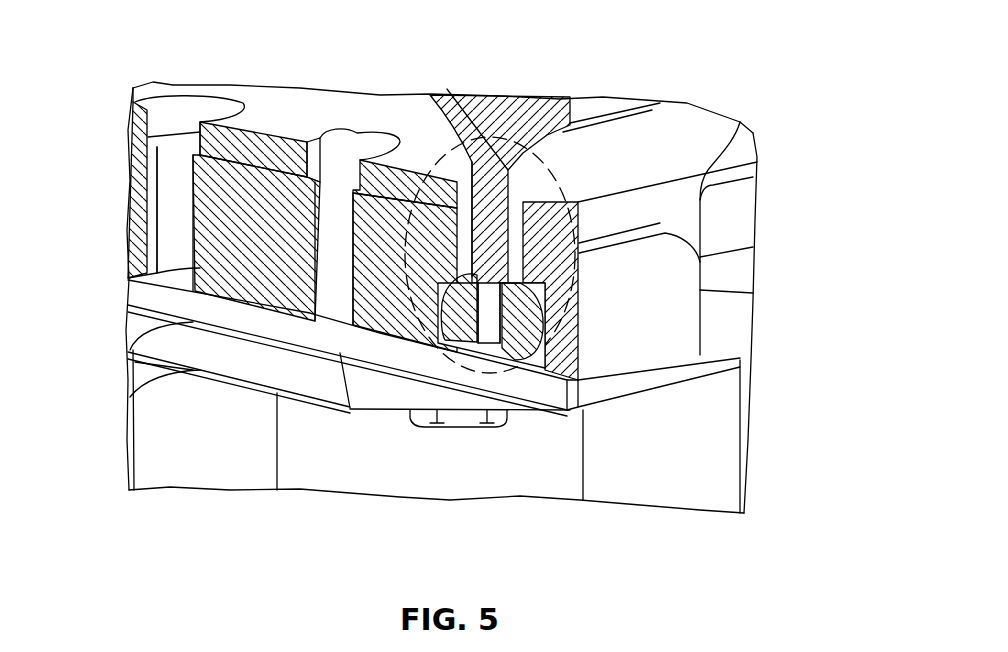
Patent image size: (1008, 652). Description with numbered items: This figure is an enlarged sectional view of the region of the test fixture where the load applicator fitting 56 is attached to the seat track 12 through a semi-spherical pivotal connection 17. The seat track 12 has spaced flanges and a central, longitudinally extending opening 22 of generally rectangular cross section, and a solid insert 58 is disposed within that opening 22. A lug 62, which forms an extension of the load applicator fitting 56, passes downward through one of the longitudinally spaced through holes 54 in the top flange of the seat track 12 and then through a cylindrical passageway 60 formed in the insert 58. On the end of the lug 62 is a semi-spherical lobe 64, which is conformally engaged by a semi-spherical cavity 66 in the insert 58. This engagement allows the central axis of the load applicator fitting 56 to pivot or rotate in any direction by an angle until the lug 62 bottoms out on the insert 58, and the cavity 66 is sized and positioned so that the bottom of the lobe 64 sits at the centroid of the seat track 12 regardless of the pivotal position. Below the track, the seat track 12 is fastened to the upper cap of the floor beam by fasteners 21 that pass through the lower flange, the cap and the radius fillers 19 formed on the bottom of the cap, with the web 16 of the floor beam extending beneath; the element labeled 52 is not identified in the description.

The seat track 12 is at (760, 147).
The web 16 is at (307, 468).
The semi-spherical pivotal connection 17 is at (530, 330).
The radius fillers 19 is at (452, 397).
The fasteners 21 is at (471, 424).
The longitudinally extending opening 22 is at (680, 221).
The plate 52 is at (129, 356).
The through holes 54 is at (340, 146).
The load applicator fitting 56 is at (513, 123).
The solid insert 58 is at (660, 307).
The cylindrical passageway 60 is at (333, 244).
The lug 62 is at (472, 273).
The semi-spherical lobe 64 is at (505, 372).
The semi-spherical cavity 66 is at (545, 301).